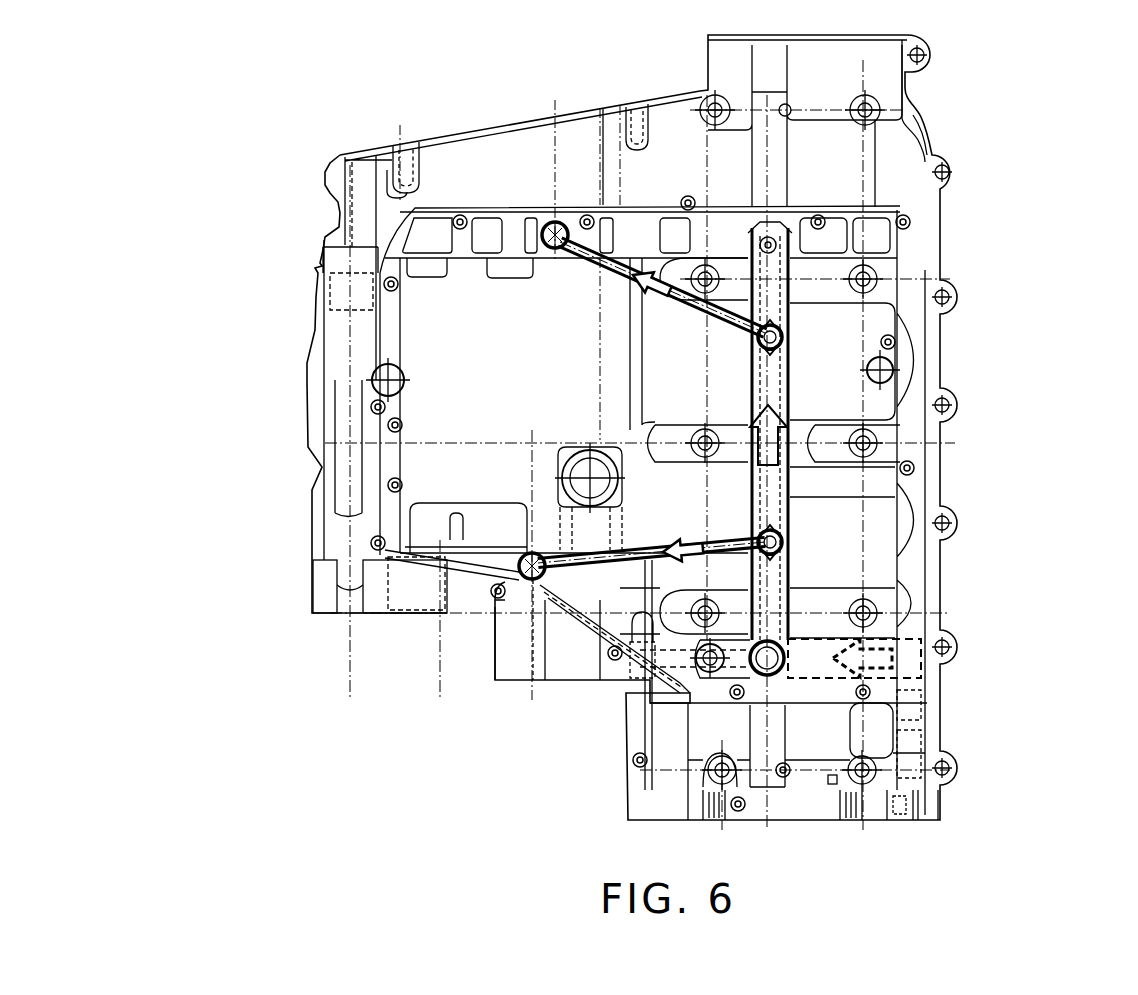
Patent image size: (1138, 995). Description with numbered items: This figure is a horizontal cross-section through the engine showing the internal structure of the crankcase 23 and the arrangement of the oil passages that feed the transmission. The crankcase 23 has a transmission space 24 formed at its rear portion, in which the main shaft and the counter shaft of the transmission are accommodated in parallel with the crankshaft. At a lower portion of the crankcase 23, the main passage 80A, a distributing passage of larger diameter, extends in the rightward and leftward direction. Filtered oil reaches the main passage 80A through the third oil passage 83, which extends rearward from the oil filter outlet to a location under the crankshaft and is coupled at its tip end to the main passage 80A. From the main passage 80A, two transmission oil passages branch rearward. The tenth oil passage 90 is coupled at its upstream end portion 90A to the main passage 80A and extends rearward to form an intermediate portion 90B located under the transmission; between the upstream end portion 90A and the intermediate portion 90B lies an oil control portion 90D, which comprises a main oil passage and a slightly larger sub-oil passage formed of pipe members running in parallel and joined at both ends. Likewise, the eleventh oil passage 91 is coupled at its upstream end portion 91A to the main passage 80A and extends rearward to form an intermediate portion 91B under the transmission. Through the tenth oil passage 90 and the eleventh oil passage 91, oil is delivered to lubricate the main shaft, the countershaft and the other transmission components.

The crankcase 23 is at (935, 128).
The transmission space 24 is at (408, 330).
The main passage 80A is at (790, 488).
The third oil passage 83 is at (933, 610).
The tenth oil passage 90 is at (578, 582).
The upstream end portion 90A is at (760, 562).
The intermediate portion 90B is at (523, 588).
The oil control portion 90D is at (620, 565).
The eleventh oil passage 91 is at (632, 274).
The upstream end portion 91A is at (755, 325).
The intermediate portion 91B is at (552, 226).